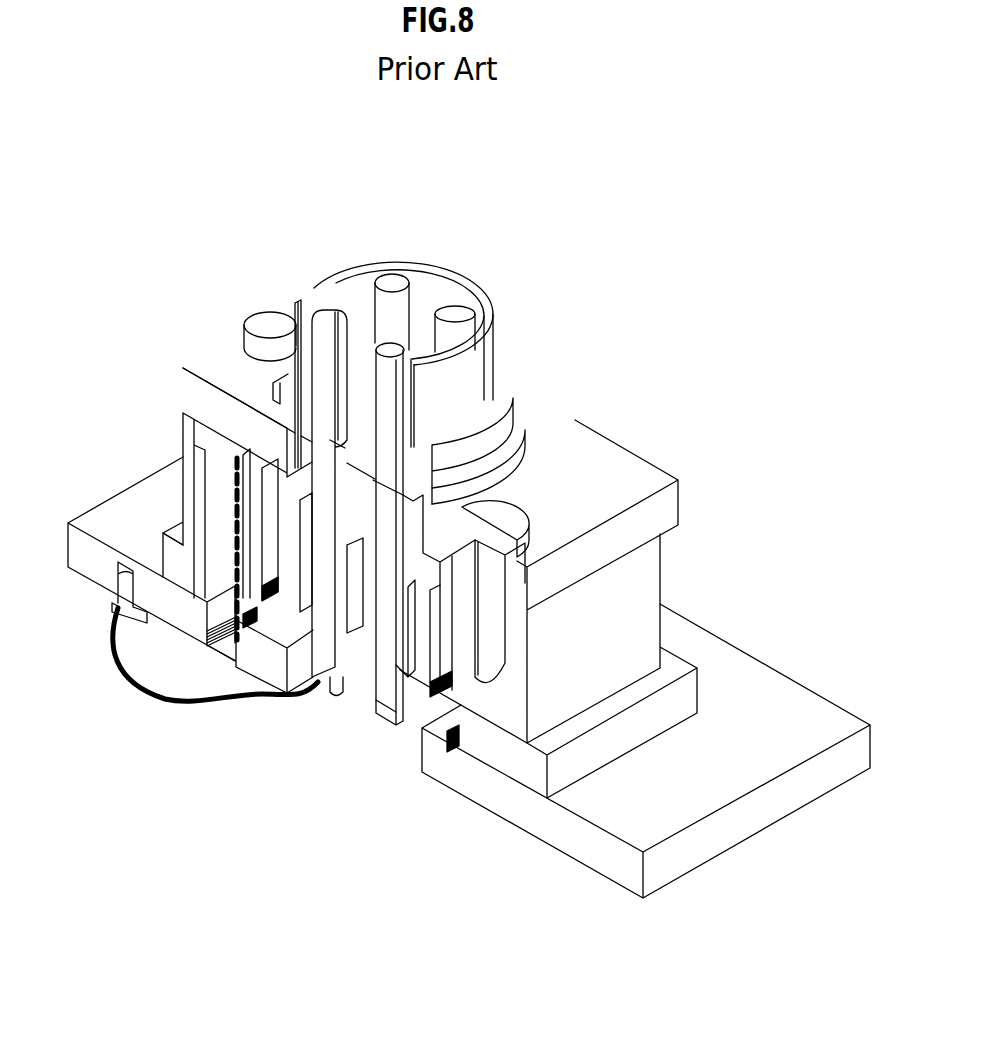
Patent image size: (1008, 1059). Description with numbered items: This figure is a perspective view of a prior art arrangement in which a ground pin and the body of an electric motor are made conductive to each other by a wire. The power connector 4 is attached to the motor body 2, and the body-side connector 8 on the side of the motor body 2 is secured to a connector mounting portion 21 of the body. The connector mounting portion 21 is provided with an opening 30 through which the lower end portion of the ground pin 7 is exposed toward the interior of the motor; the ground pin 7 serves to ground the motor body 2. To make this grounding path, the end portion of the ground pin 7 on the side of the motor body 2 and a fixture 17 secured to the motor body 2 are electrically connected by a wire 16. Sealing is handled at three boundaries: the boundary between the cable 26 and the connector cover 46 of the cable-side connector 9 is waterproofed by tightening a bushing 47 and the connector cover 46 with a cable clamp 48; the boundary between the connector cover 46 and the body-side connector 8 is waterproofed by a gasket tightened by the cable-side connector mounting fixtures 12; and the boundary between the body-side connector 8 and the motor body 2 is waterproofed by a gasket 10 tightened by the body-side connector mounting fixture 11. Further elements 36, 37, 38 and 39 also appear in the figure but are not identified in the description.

The motor body 2 is at (722, 733).
The power connector 4 is at (604, 320).
The ground pin 7 is at (330, 697).
The body-side connector 8 is at (189, 513).
The cable-side connector 9 is at (420, 525).
The gasket 10 is at (455, 748).
The body-side connector mounting fixture 11 is at (222, 480).
The cable-side connector mounting fixtures 12 is at (279, 364).
The wire 16 is at (216, 706).
The fixture 17 is at (113, 614).
The connector mounting portion 21 is at (168, 578).
The cable 26 is at (472, 382).
The opening 30 is at (352, 712).
The blade contact 36 is at (330, 342).
The pin contact 37 is at (380, 302).
The pin contact 38 is at (448, 327).
The pin contact 39 is at (396, 362).
The connector cover 46 is at (618, 493).
The bushing 47 is at (500, 420).
The cable clamp 48 is at (514, 447).